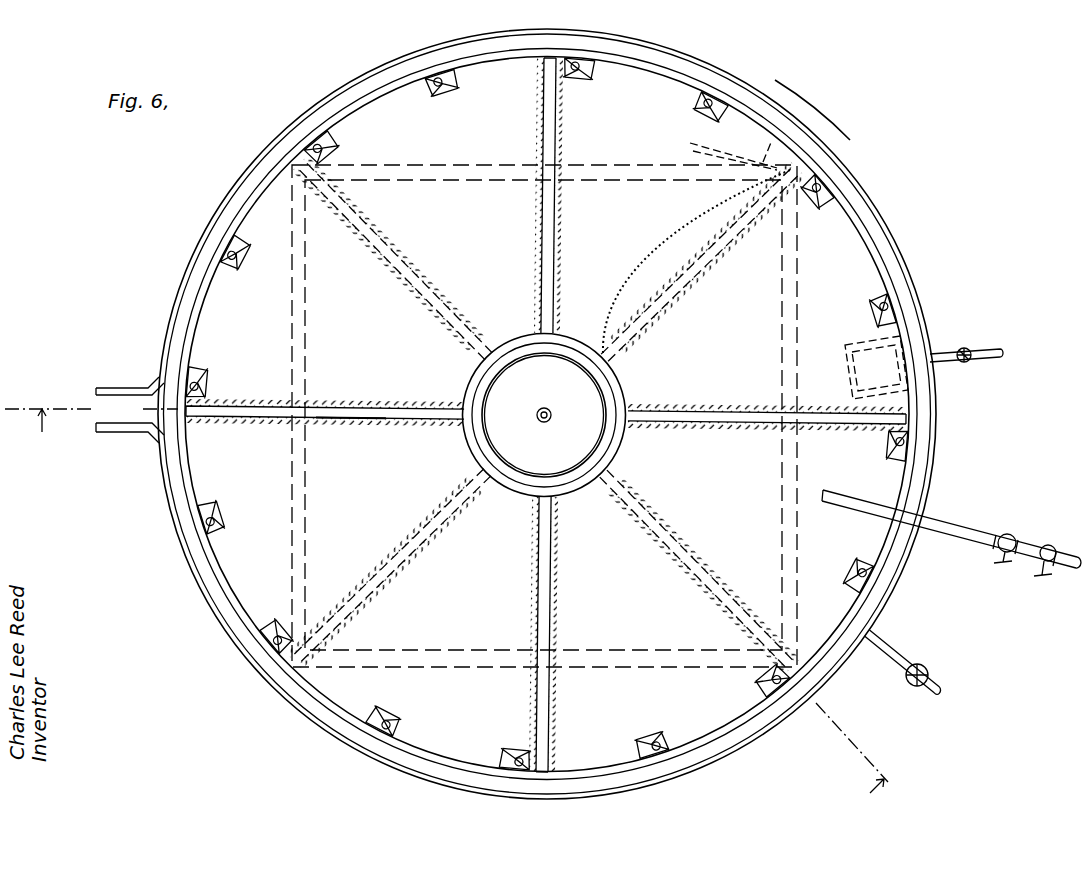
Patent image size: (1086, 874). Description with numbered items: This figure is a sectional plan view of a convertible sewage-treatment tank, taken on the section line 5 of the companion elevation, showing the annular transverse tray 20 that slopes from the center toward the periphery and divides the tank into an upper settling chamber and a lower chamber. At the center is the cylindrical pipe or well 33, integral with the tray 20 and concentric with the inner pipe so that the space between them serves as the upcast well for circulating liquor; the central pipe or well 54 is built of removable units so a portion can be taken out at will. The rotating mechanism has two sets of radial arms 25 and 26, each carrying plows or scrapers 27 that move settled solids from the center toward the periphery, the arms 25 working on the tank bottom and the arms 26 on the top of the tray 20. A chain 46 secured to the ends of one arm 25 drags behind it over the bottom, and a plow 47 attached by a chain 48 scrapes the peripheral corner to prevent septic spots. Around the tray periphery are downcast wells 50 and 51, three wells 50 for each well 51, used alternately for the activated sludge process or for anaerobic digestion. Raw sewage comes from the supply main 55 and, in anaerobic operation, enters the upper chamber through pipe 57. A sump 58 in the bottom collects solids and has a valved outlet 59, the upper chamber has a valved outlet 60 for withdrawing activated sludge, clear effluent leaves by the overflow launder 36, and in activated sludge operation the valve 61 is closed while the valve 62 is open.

The section line 5- 5 is at (446, 603).
The transverse tray 20 is at (522, 414).
The radial arms 25 is at (701, 263).
The radial arms 26 is at (546, 389).
The plows or scrapers 27 is at (350, 441).
The cylindrical pipe or well 33 is at (470, 387).
The overflow launder 36 is at (213, 600).
The chain 46 is at (652, 241).
The plow 47 is at (692, 146).
The chain 48 is at (803, 140).
The downcast wells 50 is at (237, 273).
The downcast wells 51 is at (330, 151).
The pipe or well 54 is at (486, 424).
The supply main 55 is at (1030, 546).
The pipe 57 is at (867, 503).
The sump 58 is at (847, 357).
The valved outlet 59 is at (952, 350).
The valved outlet 60 is at (890, 653).
The valve 61 is at (1004, 567).
The valve 62 is at (1041, 582).